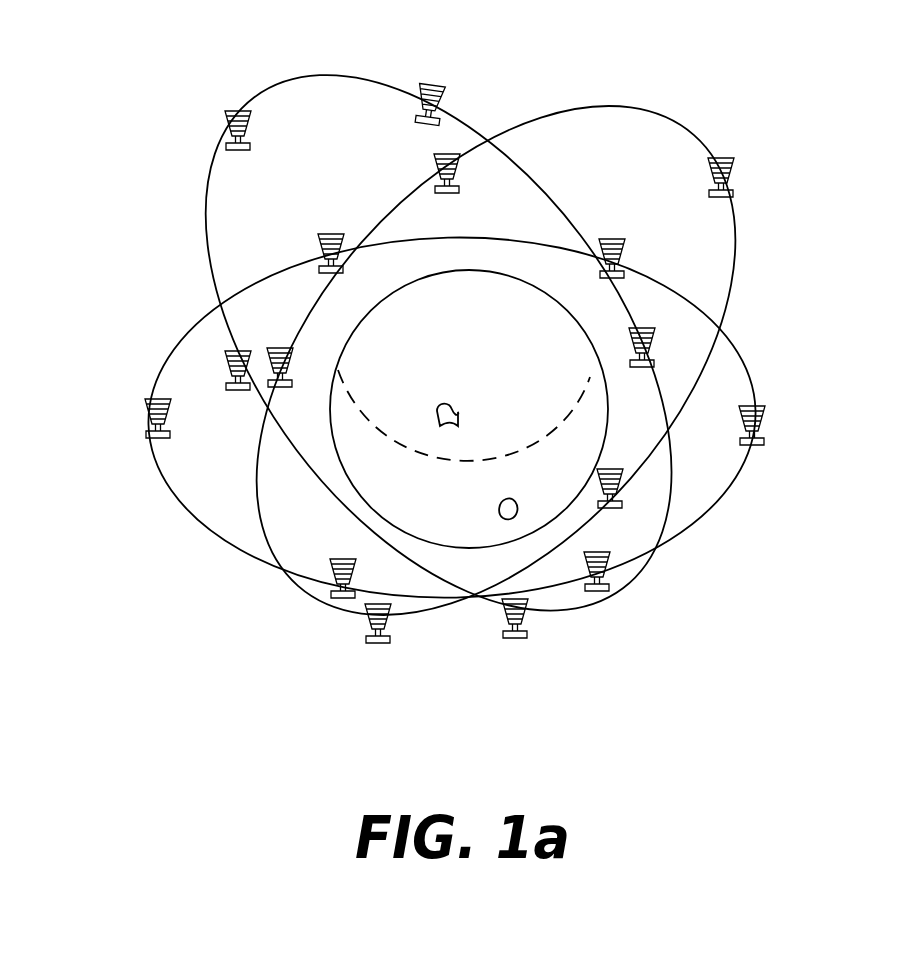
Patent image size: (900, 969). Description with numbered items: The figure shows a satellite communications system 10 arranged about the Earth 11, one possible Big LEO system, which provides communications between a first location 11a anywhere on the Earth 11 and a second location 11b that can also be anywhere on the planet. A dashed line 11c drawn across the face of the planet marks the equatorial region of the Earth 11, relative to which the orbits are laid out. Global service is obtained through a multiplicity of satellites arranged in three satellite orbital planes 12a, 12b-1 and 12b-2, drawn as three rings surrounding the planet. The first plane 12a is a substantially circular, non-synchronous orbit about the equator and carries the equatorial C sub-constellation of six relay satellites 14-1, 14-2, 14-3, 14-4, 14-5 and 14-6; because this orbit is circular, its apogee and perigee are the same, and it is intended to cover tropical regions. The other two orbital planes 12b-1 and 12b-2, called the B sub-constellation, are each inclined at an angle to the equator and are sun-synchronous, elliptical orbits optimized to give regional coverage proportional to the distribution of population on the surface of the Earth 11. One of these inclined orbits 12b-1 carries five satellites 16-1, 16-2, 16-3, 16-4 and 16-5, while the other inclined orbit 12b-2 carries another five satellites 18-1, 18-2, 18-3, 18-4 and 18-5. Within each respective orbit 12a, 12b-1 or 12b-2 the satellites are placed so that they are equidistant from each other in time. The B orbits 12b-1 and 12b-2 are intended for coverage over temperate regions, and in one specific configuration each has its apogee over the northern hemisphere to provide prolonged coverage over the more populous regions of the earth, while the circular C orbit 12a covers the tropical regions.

The satellite communications system 10 is at (44, 150).
The Earth 11 is at (601, 427).
The first location 11a is at (457, 402).
The second location 11b is at (499, 504).
The object equator line 11c is at (498, 452).
The first satellite orbital plane 12a is at (757, 348).
The second satellite orbital plane 12b-1 is at (737, 247).
The third satellite orbital plane 12b-2 is at (203, 247).
The relay satellite 14-1 is at (765, 416).
The relay satellite 14-2 is at (610, 588).
The relay satellite 14-3 is at (336, 598).
The relay satellite 14-4 is at (148, 412).
The relay satellite 14-5 is at (333, 235).
The relay satellite 14-6 is at (658, 208).
The satellite 16-1 is at (727, 158).
The satellite 16-2 is at (623, 504).
The satellite 16-3 is at (378, 645).
The satellite 16-4 is at (282, 348).
The satellite 16-5 is at (452, 193).
The satellite 18-1 is at (237, 111).
The satellite 18-2 is at (433, 85).
The satellite 18-3 is at (672, 323).
The satellite 18-4 is at (518, 640).
The satellite 18-5 is at (230, 390).